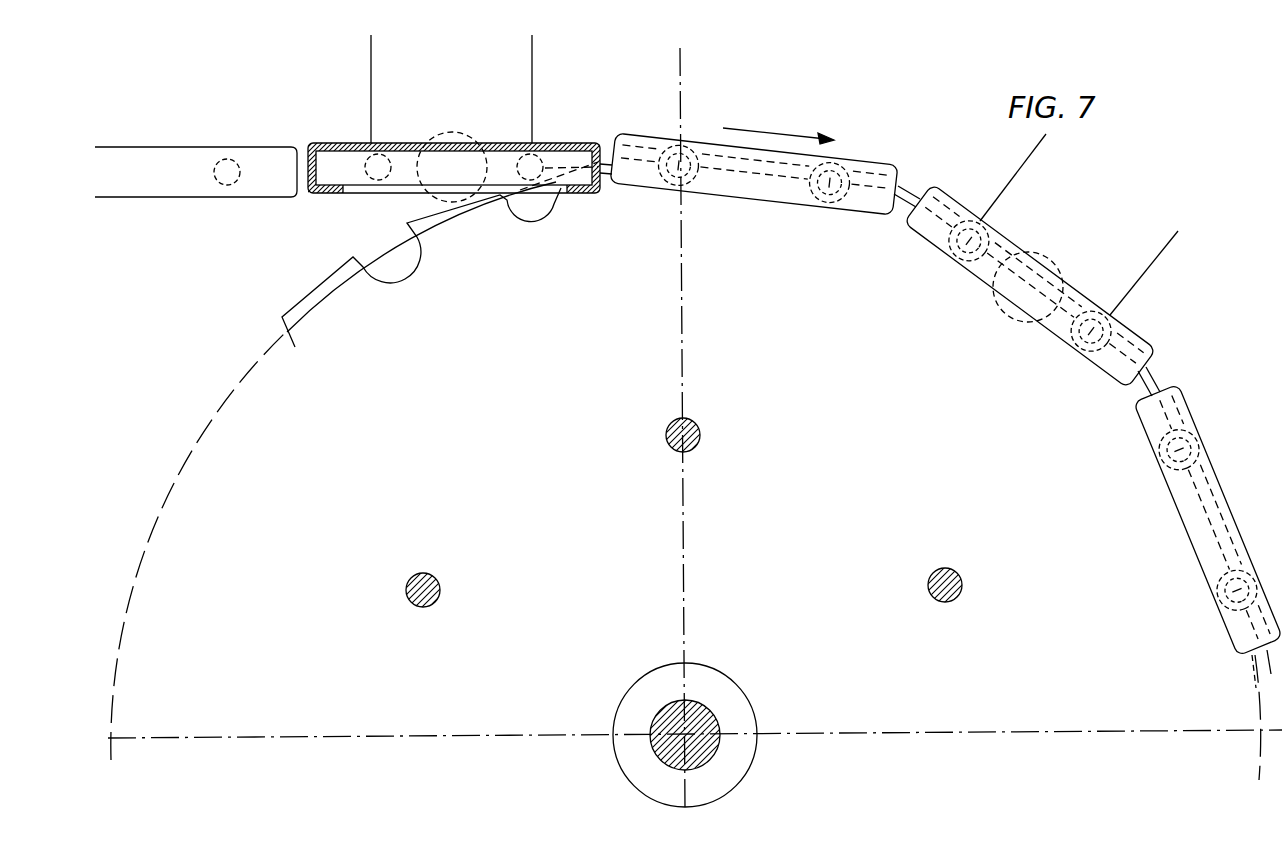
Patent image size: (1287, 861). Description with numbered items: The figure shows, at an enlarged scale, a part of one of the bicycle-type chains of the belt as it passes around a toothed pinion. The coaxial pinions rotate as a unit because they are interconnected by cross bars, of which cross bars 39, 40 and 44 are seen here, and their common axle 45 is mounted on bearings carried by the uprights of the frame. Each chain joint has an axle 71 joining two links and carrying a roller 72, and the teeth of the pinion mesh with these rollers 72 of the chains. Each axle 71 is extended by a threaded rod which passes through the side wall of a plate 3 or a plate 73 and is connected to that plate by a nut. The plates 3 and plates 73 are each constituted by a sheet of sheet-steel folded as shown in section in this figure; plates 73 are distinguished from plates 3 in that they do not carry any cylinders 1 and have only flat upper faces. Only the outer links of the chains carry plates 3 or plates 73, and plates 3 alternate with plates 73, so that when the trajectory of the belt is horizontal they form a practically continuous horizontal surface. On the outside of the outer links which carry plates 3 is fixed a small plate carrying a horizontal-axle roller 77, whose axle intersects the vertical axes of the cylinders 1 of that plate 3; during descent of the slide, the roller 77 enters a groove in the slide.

The cylinder 1 is at (533, 96).
The plate 3 is at (400, 194).
The cross bar 39 is at (668, 440).
The cross bar 40 is at (930, 578).
The cross bar 44 is at (448, 582).
The common axle 45 is at (708, 716).
The axle 71 is at (366, 170).
The roller 72 is at (688, 148).
The plate 73 is at (186, 196).
The roller 77 is at (454, 138).